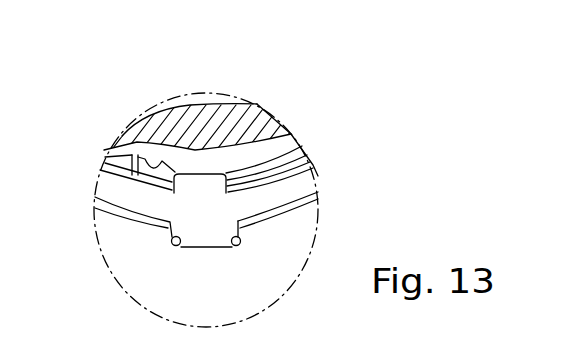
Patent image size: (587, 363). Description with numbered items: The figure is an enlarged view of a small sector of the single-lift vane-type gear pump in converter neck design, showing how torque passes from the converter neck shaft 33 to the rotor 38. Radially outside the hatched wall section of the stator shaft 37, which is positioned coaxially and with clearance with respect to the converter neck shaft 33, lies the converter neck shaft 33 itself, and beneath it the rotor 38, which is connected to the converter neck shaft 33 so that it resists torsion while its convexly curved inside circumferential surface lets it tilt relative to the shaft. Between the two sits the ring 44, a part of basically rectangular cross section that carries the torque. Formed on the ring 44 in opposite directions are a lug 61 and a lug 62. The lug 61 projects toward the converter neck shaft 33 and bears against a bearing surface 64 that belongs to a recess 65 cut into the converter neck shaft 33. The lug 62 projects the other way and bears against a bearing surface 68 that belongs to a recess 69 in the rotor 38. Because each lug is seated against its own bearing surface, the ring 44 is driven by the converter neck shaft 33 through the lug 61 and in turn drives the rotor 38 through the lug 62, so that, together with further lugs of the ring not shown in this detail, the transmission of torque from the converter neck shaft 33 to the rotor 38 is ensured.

The converter neck shaft 33 is at (298, 148).
The stator shaft 37 is at (253, 105).
The rotor 38 is at (277, 247).
The ring 44 is at (303, 183).
The lug 61 is at (194, 183).
The lug 62 is at (202, 240).
The bearing surface 64 is at (221, 182).
The recess 65 is at (139, 147).
The bearing surface 68 is at (175, 246).
The recess 69 is at (233, 246).